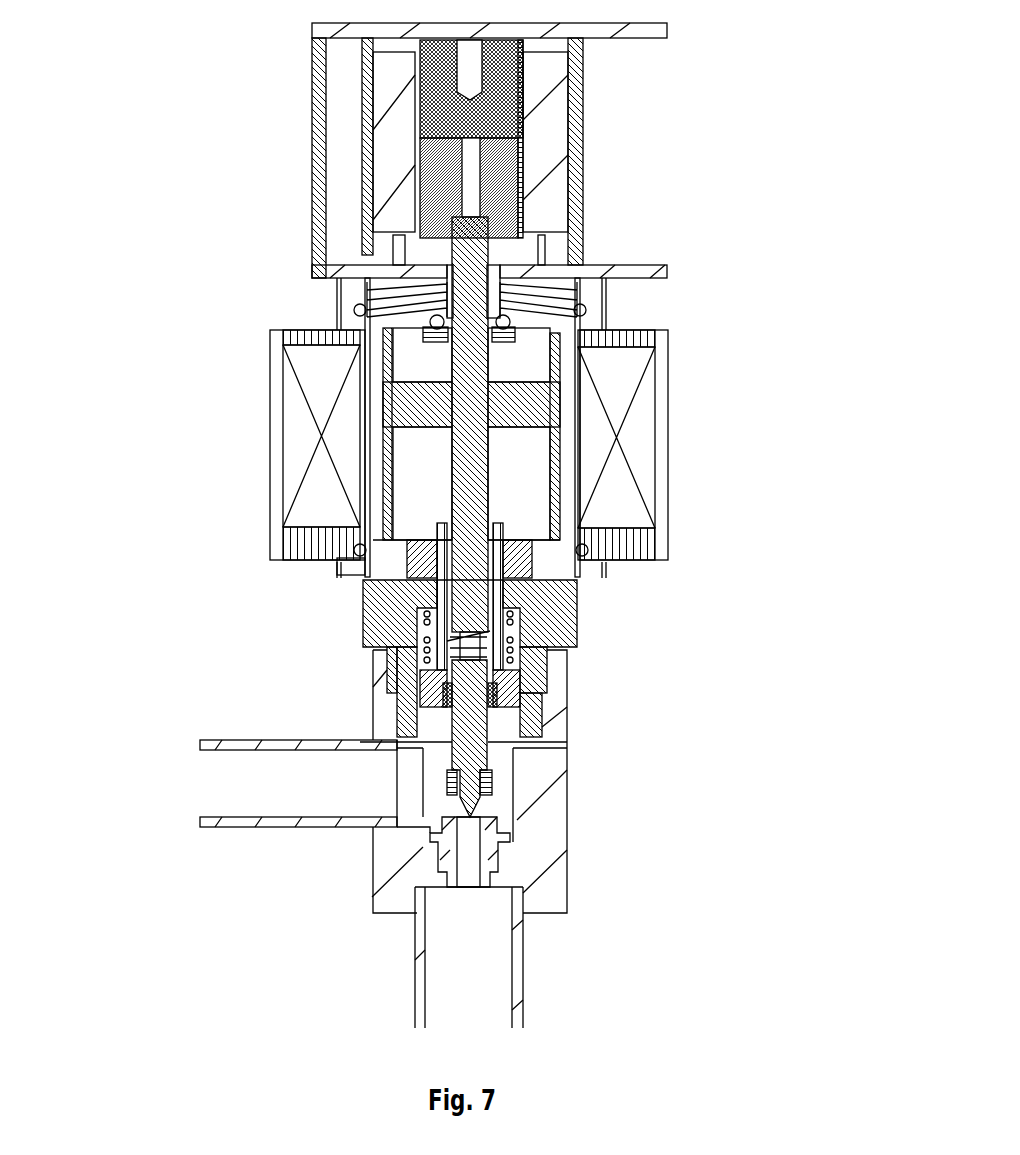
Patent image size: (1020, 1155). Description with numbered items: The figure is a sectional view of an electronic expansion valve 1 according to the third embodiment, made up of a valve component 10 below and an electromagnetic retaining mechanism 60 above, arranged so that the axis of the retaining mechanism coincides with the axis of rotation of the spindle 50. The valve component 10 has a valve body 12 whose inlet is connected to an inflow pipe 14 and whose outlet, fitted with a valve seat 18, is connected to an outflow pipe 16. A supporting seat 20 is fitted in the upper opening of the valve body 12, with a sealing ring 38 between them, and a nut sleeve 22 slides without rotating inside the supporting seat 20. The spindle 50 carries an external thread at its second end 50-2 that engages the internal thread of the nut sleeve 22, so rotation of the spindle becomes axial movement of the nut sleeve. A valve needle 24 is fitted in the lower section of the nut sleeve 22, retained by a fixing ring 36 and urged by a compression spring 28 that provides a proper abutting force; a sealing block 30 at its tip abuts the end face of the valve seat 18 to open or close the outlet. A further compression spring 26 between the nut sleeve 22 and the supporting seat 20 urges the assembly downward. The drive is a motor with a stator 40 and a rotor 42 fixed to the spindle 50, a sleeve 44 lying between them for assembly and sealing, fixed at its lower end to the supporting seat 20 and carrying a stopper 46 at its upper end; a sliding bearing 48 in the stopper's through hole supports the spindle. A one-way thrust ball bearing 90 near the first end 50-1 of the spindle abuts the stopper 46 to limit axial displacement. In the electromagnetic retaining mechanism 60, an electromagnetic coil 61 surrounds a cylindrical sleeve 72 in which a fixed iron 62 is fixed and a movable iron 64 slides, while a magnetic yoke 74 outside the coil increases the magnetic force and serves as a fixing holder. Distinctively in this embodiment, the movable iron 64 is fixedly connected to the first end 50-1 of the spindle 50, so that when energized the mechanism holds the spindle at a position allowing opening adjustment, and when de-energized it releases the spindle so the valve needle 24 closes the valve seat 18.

The electronic expansion valve 1 is at (248, 997).
The valve component 10 is at (150, 604).
The valve body 12 is at (530, 832).
The inflow pipe 14 is at (250, 822).
The outflow pipe 16 is at (515, 975).
The valve seat 18 is at (487, 848).
The supporting seat 20 is at (557, 628).
The nut sleeve 22 is at (520, 572).
The valve needle 24 is at (467, 758).
The compression spring 26 is at (440, 658).
The compression spring 28 is at (455, 616).
The sealing block 30 is at (447, 788).
The fixing ring 36 is at (497, 702).
The sealing ring 38 is at (430, 745).
The stator 40 is at (633, 408).
The rotor 42 is at (553, 442).
The sleeve 44 is at (367, 500).
The stopper 46 is at (572, 285).
The sliding bearing 48 is at (447, 283).
The spindle 50 is at (467, 450).
The first end of the spindle 50-1 is at (465, 250).
The second end of the spindle 50-2 is at (462, 575).
The electromagnetic retaining mechanism 60 is at (243, 160).
The electromagnetic coil 61 is at (403, 98).
The fixed iron 62 is at (505, 67).
The movable iron 64 is at (505, 168).
The sleeve 72 is at (518, 127).
The magnetic yoke 74 is at (623, 30).
The one-way thrust ball bearing 90 is at (507, 330).